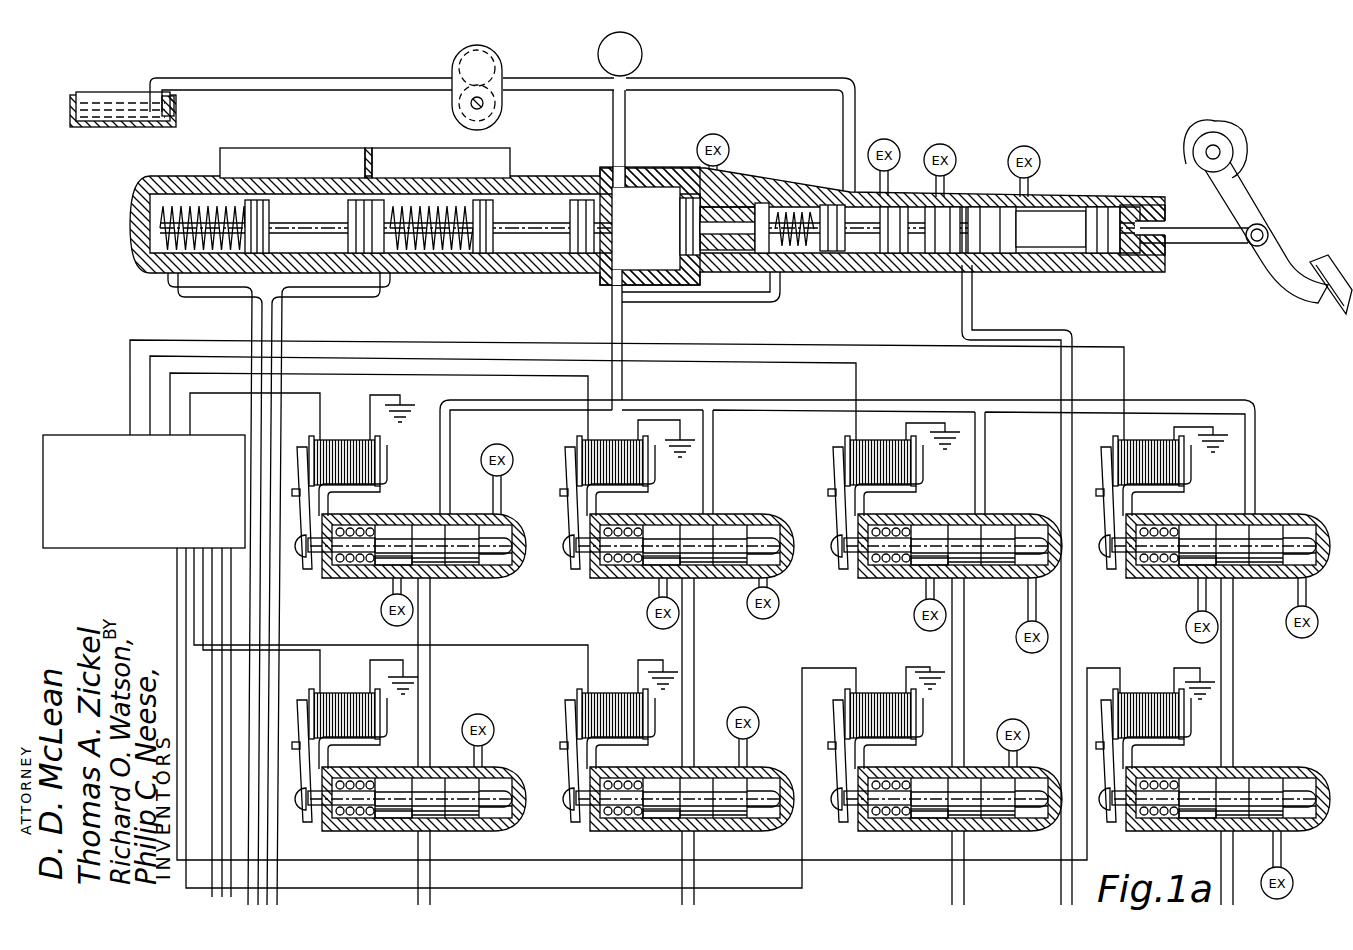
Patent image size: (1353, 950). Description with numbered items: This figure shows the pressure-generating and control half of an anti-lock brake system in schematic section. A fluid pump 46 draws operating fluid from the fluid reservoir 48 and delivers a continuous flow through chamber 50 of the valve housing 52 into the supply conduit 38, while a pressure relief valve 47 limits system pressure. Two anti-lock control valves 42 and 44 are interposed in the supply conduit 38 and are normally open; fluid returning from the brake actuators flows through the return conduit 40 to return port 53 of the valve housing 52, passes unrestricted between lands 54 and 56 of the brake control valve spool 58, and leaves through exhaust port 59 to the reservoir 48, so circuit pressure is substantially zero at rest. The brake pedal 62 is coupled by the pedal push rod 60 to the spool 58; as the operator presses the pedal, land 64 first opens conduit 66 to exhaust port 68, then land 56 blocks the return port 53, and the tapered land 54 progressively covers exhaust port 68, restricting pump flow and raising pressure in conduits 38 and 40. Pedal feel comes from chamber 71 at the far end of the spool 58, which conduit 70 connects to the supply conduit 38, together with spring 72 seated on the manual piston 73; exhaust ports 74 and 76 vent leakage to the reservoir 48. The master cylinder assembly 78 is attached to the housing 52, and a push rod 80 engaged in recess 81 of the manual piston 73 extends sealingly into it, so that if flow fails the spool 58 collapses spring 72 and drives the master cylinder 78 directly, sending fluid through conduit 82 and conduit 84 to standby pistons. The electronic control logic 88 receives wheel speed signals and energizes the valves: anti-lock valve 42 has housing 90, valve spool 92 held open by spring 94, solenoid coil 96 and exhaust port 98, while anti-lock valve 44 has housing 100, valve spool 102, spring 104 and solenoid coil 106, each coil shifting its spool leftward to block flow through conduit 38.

The supply conduit 38 is at (611, 319).
The return conduit 40 is at (973, 314).
The anti-lock control valve 42 is at (811, 522).
The anti-lock control valve 44 is at (811, 775).
The fluid pump 46 is at (452, 72).
The pressure relief valve 47 is at (640, 50).
The fluid reservoir 48 is at (135, 100).
The chamber 50 is at (640, 180).
The valve housing 52 is at (765, 210).
The return port 53 is at (960, 262).
The land 54 is at (940, 255).
The land 56 is at (988, 256).
The brake control valve spool 58 is at (1102, 222).
The exhaust port 59 is at (945, 212).
The pedal push rod 60 is at (1230, 244).
The brake pedal 62 is at (1240, 196).
The land 64 is at (890, 258).
The conduit 66 is at (802, 86).
The exhaust port 68 is at (886, 214).
The conduit 70 is at (735, 303).
The chamber 71 is at (795, 258).
The spring 72 is at (825, 215).
The manual piston 73 is at (686, 238).
The exhaust port 74 is at (1040, 216).
The exhaust port 76 is at (722, 200).
The master cylinder assembly 78 is at (132, 192).
The push rod 80 is at (640, 226).
The recess 81 is at (745, 210).
The conduit 82 is at (251, 314).
The conduit 84 is at (283, 319).
The electronic control logic 88 is at (97, 434).
The housing 90 is at (524, 578).
The valve spool 92 is at (430, 530).
The spring 94 is at (368, 528).
The solenoid coil 96 is at (340, 438).
The exhaust port 98 is at (376, 578).
The housing 100 is at (498, 798).
The valve spool 102 is at (418, 790).
The spring 104 is at (352, 830).
The solenoid coil 106 is at (340, 692).